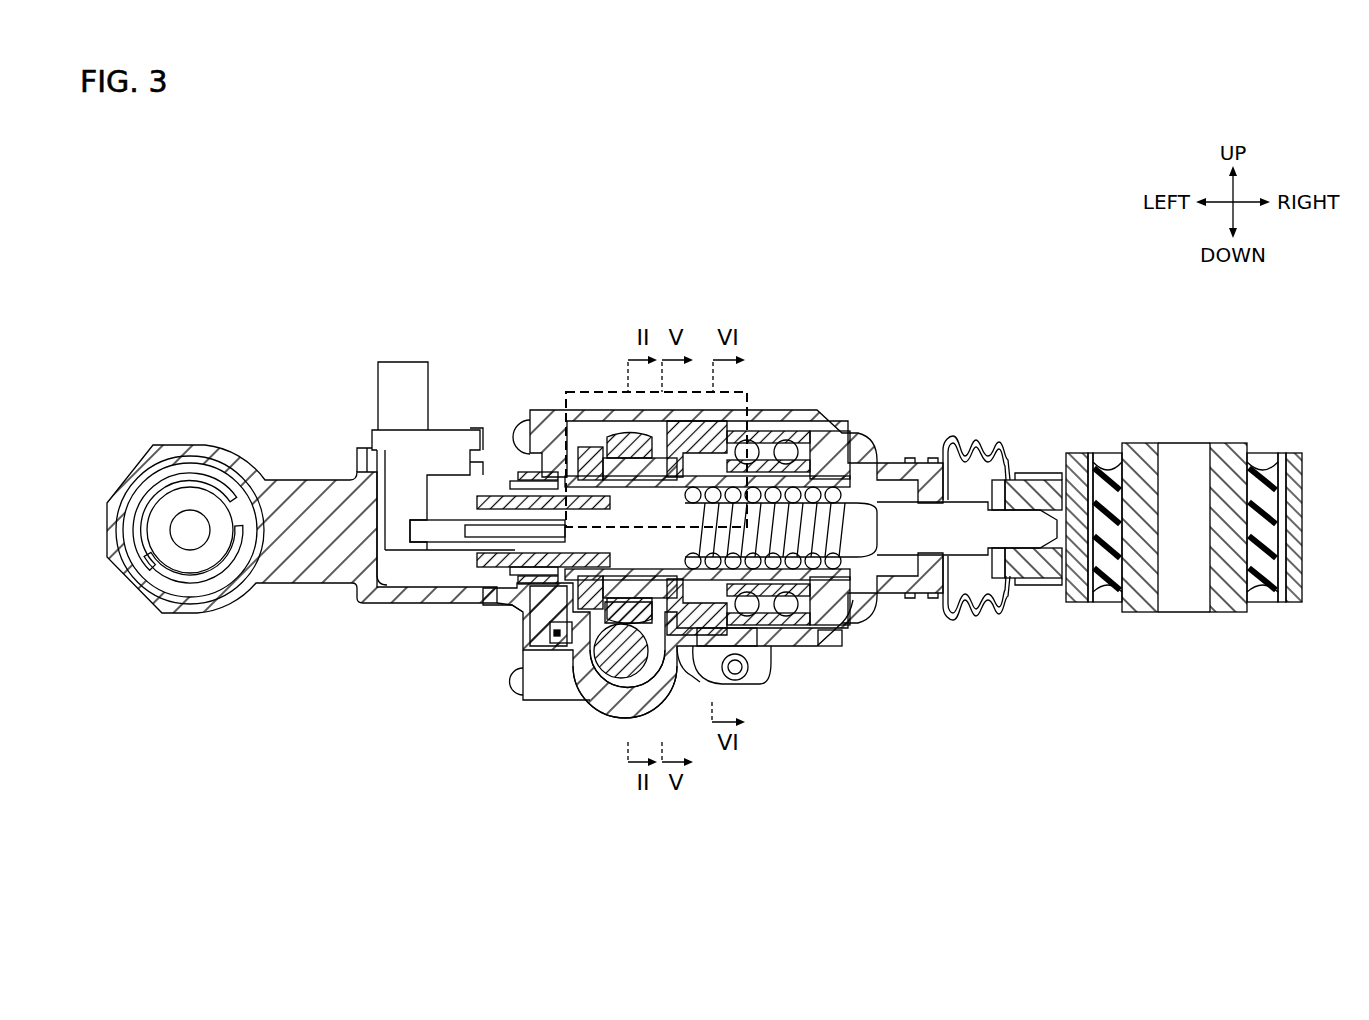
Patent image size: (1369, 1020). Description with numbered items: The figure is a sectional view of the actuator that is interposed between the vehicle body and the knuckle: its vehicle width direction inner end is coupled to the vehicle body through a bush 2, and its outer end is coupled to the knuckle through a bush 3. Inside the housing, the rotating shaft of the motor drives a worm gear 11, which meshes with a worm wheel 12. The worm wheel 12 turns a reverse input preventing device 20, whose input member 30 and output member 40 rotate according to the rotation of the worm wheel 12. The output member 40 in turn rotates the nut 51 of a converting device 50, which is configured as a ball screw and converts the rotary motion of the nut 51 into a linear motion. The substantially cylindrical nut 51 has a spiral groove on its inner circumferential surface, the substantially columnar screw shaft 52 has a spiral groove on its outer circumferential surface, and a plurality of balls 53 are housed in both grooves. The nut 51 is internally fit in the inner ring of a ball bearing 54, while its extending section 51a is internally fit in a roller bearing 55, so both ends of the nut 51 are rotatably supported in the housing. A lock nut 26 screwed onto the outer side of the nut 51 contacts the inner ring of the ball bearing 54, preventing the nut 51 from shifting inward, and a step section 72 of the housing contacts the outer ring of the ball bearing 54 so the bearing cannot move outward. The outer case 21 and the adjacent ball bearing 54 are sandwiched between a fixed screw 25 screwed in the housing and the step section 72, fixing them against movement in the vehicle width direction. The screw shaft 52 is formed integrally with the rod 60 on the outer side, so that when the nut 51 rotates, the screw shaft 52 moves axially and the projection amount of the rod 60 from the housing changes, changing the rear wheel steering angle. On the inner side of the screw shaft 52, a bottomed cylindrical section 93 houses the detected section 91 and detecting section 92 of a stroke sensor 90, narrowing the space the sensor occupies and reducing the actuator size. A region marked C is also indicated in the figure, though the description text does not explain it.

The bush 2 is at (197, 585).
The bush 3 is at (1230, 623).
The worm gear 11 is at (613, 689).
The worm wheel 12 is at (524, 655).
The reverse input preventing device 20 is at (688, 437).
The outer case 21 is at (748, 646).
The fixed screw 25 is at (680, 686).
The lock nut 26 is at (858, 622).
The input member 30 is at (652, 462).
The output member 40 is at (702, 440).
The converting device 50 is at (819, 473).
The nut 51 is at (800, 440).
The extending section 51a is at (522, 480).
The screw shaft 52 is at (795, 362).
The balls 53 is at (840, 450).
The ball bearing 54 is at (785, 646).
The roller bearing 55 is at (544, 466).
The rod 60 is at (962, 520).
The step section 72 is at (835, 646).
The stroke sensor 90 is at (488, 529).
The detected section 91 is at (450, 530).
The detecting section 92 is at (447, 552).
The bottomed cylindrical section 93 is at (535, 576).
The control region C is at (588, 390).